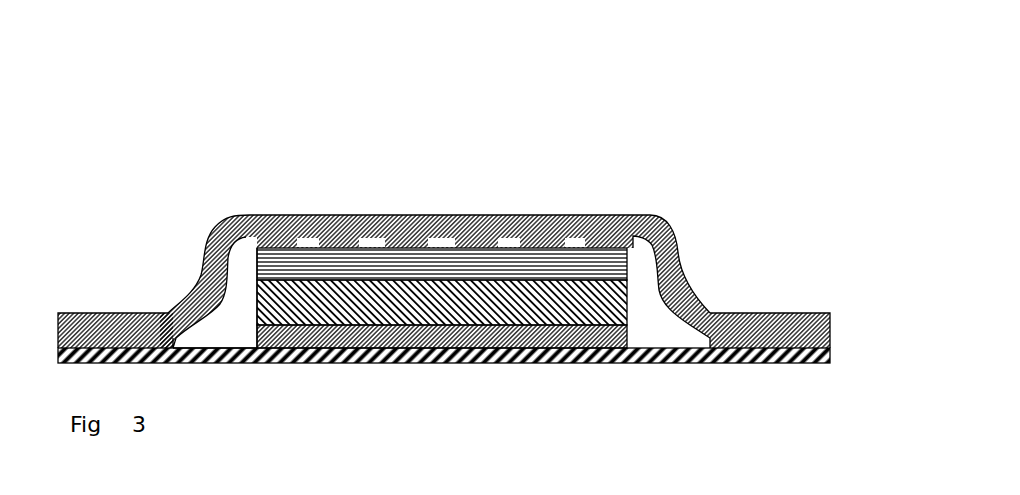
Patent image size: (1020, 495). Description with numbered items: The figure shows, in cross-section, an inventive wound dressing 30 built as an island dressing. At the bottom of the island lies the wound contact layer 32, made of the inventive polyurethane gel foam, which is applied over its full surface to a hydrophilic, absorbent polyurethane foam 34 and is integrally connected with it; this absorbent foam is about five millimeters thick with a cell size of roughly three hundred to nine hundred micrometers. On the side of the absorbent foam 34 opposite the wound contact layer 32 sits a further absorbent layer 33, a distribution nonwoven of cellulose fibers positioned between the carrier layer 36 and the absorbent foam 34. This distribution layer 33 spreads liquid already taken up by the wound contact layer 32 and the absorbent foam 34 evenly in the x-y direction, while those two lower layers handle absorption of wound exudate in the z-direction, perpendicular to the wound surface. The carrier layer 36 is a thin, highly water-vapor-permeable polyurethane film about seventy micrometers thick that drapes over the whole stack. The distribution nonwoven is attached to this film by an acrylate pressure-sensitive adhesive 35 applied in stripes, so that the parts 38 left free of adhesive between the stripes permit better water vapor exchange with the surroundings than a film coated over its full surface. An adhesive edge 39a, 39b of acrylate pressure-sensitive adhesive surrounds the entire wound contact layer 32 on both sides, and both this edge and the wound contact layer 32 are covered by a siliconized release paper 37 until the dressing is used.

The wound dressing 30 is at (461, 214).
The wound contact layer 32 is at (632, 336).
The further absorbent layer 33 is at (632, 261).
The hydrophilic absorbent polyurethane foam 34 is at (632, 299).
The acrylate pressure-sensitive adhesive 35 is at (336, 243).
The carrier layer 36 is at (252, 226).
The siliconized release paper 37 is at (216, 353).
The parts remaining free of acrylate adhesive 38 is at (443, 242).
The adhesive edge 39a is at (767, 338).
The adhesive edge 39b is at (67, 335).